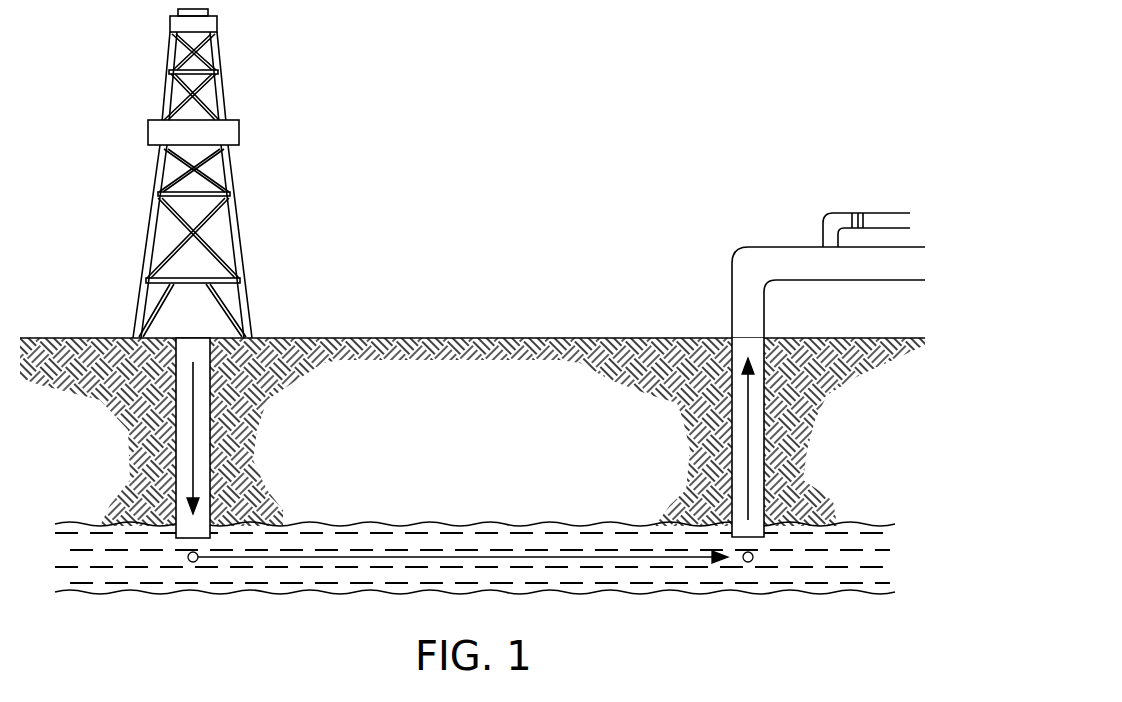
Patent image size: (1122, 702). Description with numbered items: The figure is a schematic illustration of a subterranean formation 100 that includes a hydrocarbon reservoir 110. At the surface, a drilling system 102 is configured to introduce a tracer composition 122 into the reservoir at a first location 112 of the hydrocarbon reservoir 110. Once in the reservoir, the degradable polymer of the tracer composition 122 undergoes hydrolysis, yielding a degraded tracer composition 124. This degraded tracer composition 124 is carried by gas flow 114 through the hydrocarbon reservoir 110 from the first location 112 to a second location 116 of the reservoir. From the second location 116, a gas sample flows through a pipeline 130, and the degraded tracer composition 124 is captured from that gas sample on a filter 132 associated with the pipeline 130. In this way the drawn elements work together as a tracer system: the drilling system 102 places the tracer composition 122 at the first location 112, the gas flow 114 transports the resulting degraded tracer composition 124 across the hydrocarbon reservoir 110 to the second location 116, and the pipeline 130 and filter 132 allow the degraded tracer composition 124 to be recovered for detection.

The subterranean formation 100 is at (418, 451).
The drilling system 102 is at (148, 133).
The hydrocarbon reservoir 110 is at (97, 583).
The first location 112 is at (193, 345).
The gas flow 114 is at (487, 555).
The second location 116 is at (745, 348).
The tracer composition 122 is at (192, 563).
The degraded tracer composition 124 is at (748, 563).
The pipeline 130 is at (750, 302).
The filter 132 is at (855, 213).